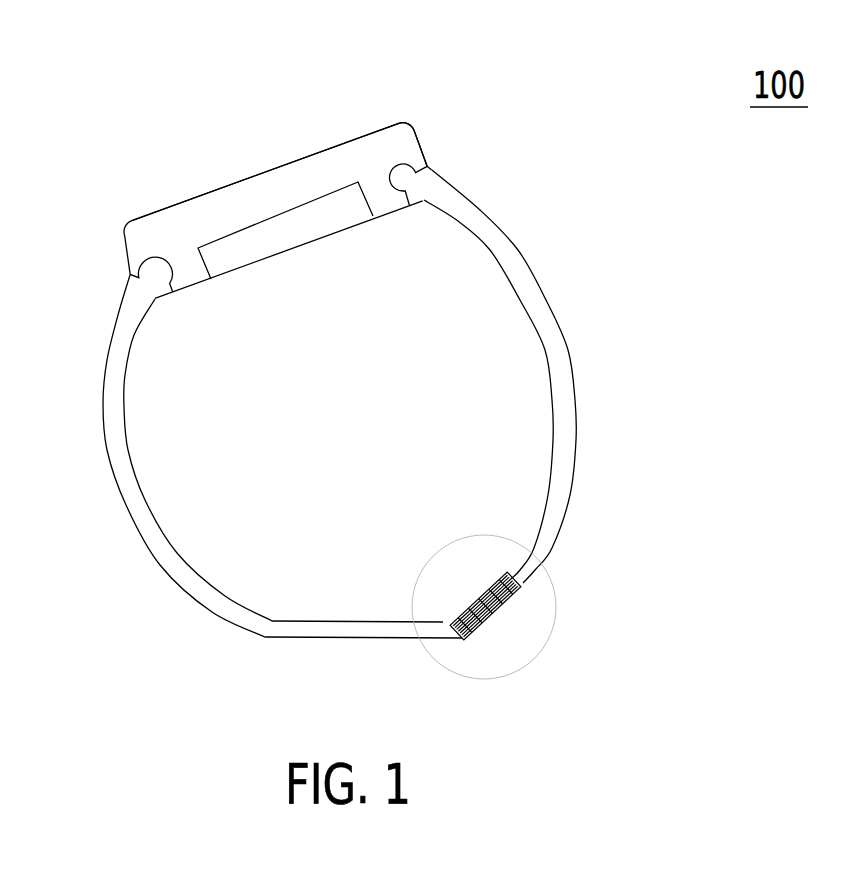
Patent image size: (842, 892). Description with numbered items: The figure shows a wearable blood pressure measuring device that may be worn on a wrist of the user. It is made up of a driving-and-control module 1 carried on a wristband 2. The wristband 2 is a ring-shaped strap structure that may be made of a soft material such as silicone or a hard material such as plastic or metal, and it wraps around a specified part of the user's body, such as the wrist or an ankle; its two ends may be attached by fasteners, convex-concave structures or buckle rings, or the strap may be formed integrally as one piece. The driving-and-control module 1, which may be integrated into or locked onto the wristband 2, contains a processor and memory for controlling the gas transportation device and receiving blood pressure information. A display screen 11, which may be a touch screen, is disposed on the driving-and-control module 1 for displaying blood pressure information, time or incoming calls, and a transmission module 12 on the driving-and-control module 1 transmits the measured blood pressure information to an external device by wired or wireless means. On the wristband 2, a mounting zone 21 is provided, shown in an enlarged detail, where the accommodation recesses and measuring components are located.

The driving-and-control module 1 is at (428, 139).
The display screen 11 is at (257, 173).
The transmission module 12 is at (242, 240).
The wristband 2 is at (528, 280).
The mounting zone 21 is at (530, 581).